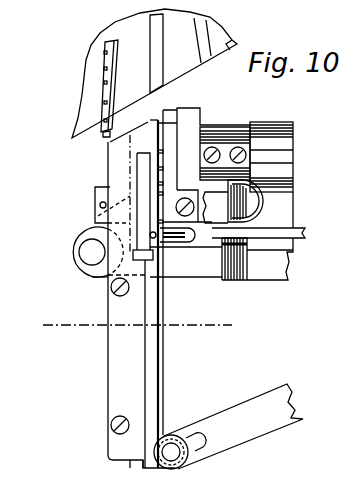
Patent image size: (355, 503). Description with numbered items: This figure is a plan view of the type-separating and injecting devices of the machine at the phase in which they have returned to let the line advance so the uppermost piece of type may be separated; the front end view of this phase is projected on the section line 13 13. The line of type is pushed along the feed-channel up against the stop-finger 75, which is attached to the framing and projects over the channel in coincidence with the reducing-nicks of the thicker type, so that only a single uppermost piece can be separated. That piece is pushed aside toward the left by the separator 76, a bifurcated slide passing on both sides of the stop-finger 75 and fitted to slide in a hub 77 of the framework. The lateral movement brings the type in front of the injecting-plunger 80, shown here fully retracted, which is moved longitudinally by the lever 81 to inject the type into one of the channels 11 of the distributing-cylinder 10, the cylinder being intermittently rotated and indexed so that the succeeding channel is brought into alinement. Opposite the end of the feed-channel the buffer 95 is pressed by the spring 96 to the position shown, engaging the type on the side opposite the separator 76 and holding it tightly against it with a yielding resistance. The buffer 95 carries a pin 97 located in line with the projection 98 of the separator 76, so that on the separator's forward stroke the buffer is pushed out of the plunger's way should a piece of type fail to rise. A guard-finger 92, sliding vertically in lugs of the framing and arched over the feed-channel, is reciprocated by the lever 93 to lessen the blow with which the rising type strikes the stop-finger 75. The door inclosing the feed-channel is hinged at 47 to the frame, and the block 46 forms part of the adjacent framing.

The distributing-cylinder 10 is at (119, 88).
The channel 11 is at (197, 58).
The section line 13 13 is at (139, 326).
The body block 46 is at (258, 268).
The hinge 47 is at (82, 254).
The stop-finger 75 is at (197, 222).
The separator 76 is at (197, 247).
The hub 77 is at (282, 157).
The injecting-plunger 80 is at (152, 392).
The lever 81 is at (228, 426).
The guard-finger 92 is at (264, 203).
The lever 93 is at (290, 233).
The buffer 95 is at (155, 171).
The spring 96 is at (100, 205).
The pin 97 is at (150, 235).
The projection 98 is at (186, 244).